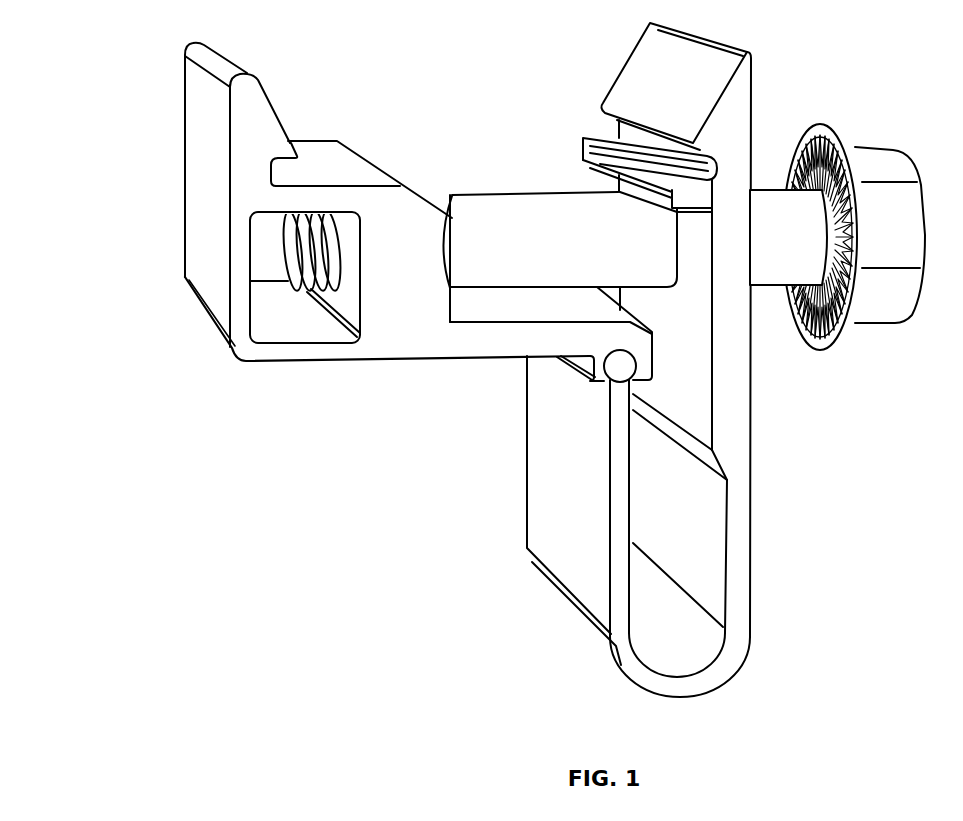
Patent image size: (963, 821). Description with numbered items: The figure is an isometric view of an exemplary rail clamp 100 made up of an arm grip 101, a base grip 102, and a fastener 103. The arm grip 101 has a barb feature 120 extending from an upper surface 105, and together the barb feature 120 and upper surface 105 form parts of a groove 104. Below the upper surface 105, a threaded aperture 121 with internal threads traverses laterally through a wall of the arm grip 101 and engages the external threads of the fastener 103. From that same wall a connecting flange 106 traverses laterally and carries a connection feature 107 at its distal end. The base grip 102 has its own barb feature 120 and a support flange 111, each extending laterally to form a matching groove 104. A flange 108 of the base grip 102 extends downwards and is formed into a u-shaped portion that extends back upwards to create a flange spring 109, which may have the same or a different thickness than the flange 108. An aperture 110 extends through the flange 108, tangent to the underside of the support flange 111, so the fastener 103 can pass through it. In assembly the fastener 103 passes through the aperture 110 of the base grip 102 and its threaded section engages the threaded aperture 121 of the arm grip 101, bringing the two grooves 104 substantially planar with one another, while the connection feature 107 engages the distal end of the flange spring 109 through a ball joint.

The rail clamp 100 is at (469, 353).
The arm grip 101 is at (380, 343).
The base grip 102 is at (732, 457).
The fastener 103 is at (768, 208).
The groove 104 is at (280, 187).
The upper surface 105 is at (340, 160).
The connecting flange 106 is at (507, 330).
The connection feature 107 is at (603, 383).
The flange 108 is at (732, 472).
The flange spring 109 is at (630, 600).
The aperture 110 is at (681, 294).
The support flange 111 is at (681, 192).
The barb feature 120 is at (253, 110).
The threaded aperture 121 is at (350, 294).